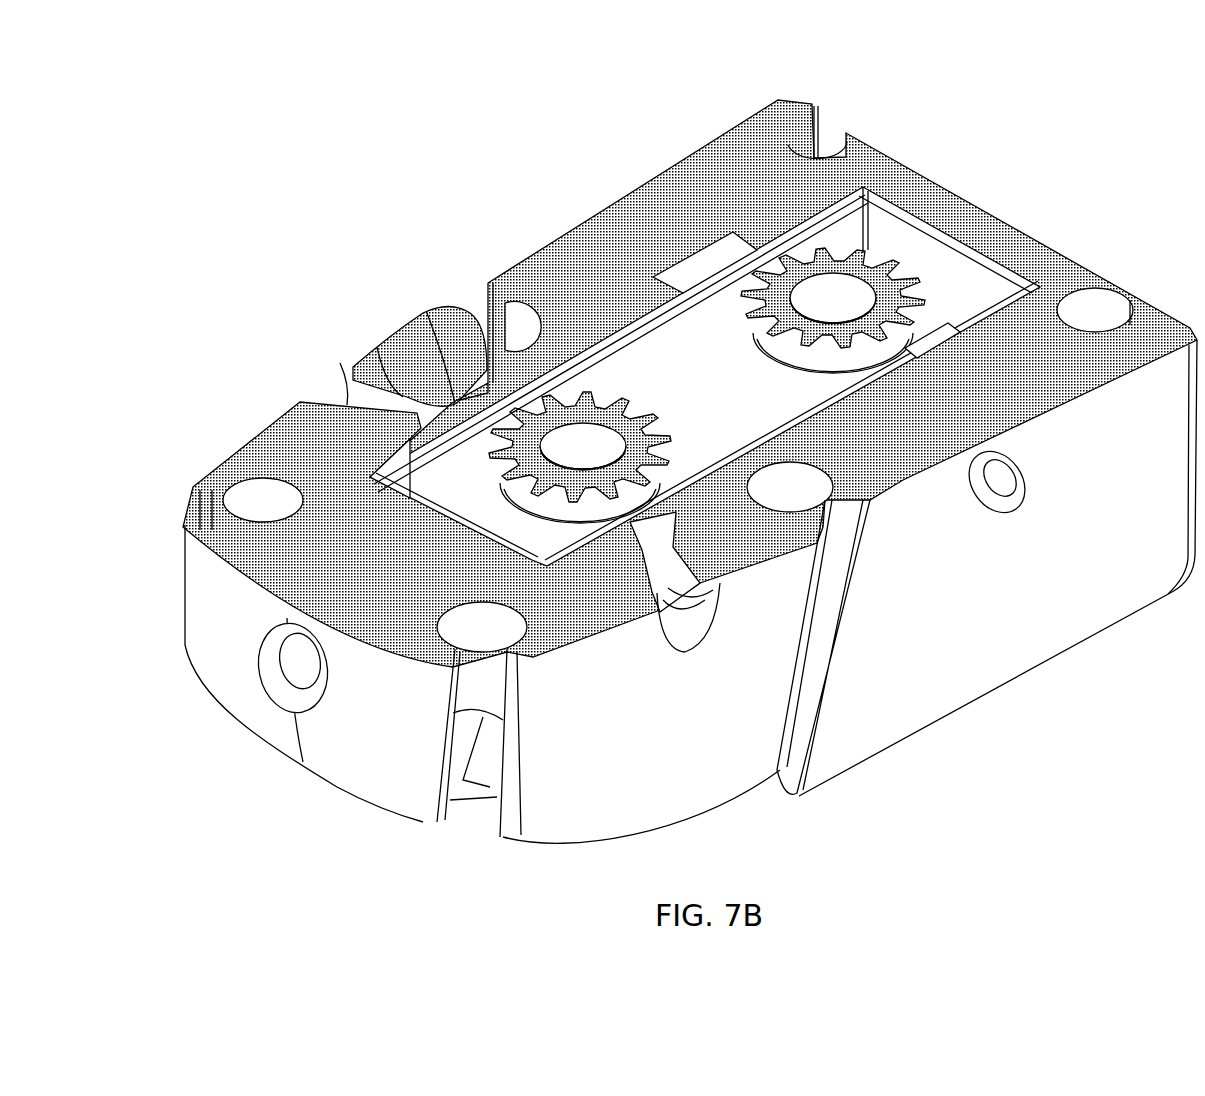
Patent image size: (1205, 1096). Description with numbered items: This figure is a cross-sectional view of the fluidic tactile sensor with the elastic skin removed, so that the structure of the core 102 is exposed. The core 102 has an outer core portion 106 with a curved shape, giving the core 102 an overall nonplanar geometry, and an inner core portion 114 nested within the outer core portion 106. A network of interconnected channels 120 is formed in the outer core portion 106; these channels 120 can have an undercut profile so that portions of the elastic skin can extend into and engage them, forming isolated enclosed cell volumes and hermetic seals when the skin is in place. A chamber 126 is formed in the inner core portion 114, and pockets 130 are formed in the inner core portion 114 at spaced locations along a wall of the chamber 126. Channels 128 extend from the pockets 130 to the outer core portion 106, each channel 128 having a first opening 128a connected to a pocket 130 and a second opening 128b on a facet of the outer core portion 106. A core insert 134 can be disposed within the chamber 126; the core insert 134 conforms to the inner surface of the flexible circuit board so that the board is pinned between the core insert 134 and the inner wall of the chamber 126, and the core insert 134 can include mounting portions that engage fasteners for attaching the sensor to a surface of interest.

The core 102 is at (750, 110).
The outer core portion 106 is at (568, 240).
The inner core portion 114 is at (737, 178).
The channels 120 is at (822, 145).
The chamber 126 is at (885, 235).
The channels 128 is at (373, 367).
The first openings 128a is at (460, 403).
The second openings 128b is at (1000, 485).
The pockets 130 is at (687, 268).
The core insert 134 is at (697, 350).